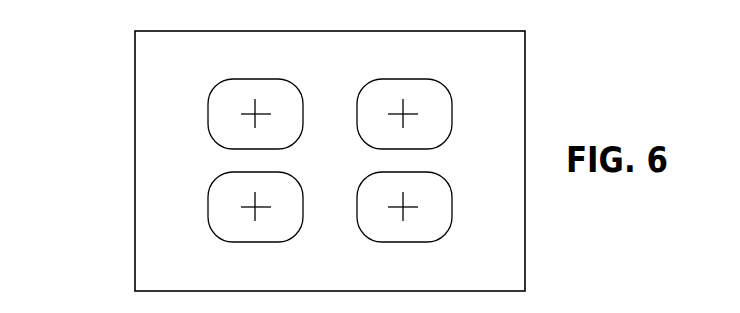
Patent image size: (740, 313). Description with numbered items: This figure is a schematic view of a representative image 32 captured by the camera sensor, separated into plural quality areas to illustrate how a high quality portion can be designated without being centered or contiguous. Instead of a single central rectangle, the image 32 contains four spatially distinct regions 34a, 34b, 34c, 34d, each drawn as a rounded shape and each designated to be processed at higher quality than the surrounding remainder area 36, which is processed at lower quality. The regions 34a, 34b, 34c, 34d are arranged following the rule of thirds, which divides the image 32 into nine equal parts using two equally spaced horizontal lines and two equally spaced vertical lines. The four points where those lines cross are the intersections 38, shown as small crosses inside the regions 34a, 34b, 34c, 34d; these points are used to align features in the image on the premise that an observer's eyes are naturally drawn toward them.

The image 32 is at (155, 68).
The spatially distinct region 34a is at (273, 93).
The spatially distinct region 34b is at (423, 93).
The spatially distinct region 34c is at (274, 226).
The spatially distinct region 34d is at (422, 226).
The remainder area 36 is at (500, 170).
The intersections 38 is at (255, 106).